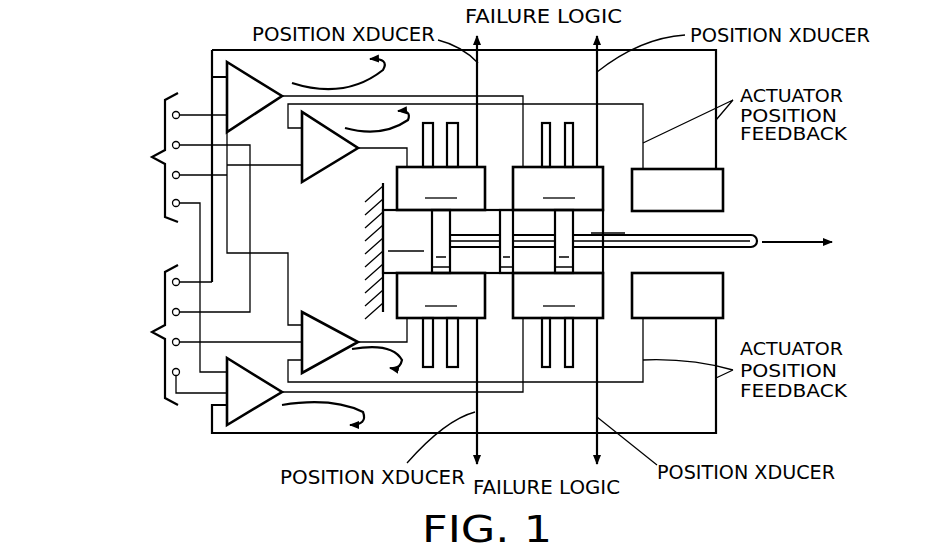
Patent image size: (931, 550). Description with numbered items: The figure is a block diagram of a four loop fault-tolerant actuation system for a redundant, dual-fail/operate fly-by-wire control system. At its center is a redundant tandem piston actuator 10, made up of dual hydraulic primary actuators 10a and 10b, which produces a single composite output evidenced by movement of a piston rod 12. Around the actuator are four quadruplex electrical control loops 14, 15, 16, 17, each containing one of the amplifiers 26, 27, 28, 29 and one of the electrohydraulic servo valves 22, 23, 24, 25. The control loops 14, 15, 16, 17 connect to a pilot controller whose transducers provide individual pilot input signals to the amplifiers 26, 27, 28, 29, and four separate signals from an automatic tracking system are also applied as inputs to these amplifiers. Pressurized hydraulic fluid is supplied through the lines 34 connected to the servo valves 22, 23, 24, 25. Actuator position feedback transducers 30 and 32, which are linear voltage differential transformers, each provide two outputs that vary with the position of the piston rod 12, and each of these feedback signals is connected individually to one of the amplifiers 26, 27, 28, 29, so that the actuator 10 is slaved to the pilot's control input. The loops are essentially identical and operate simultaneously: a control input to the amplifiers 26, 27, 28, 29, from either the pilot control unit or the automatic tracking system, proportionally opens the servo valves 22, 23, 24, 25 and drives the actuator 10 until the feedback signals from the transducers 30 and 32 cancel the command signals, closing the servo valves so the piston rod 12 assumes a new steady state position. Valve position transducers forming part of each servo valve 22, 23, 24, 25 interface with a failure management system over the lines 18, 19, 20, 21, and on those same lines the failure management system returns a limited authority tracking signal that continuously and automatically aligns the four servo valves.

The redundant tandem piston actuator 10 is at (463, 251).
The hydraulic primary actuator 10a is at (407, 241).
The hydraulic primary actuator 10b is at (601, 241).
The piston rod 12 is at (741, 250).
The electrical control loop 14 is at (207, 77).
The electrical control loop 15 is at (284, 180).
The electrical control loop 16 is at (306, 303).
The electrical control loop 17 is at (197, 428).
The line 18 is at (480, 72).
The line 19 is at (597, 88).
The line 20 is at (477, 400).
The line 21 is at (597, 402).
The electrohydraulic servo valve 22 is at (441, 188).
The electrohydraulic servo valve 23 is at (558, 188).
The electrohydraulic servo valve 24 is at (441, 295).
The electrohydraulic servo valve 25 is at (558, 295).
The amplifier 26 is at (245, 81).
The amplifier 27 is at (327, 152).
The amplifier 28 is at (330, 326).
The amplifier 29 is at (253, 384).
The actuator position feedback transducer 30 is at (725, 192).
The actuator position feedback transducer 32 is at (723, 302).
The lines 34 is at (447, 143).